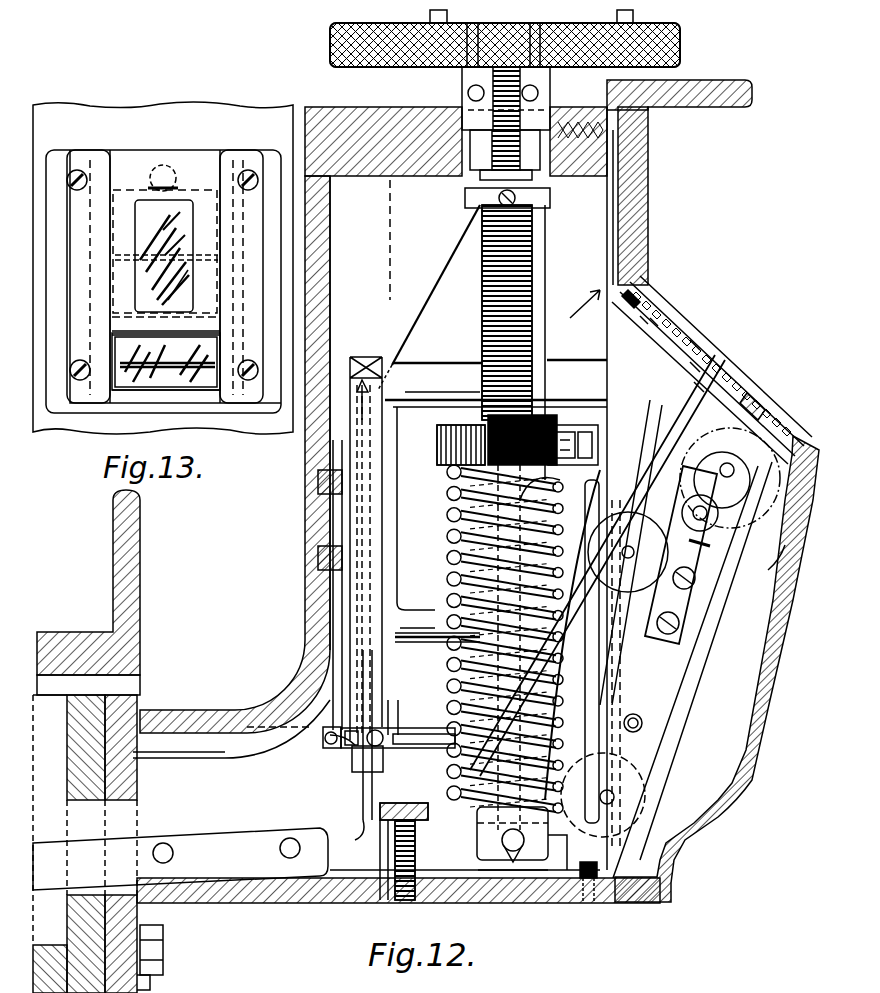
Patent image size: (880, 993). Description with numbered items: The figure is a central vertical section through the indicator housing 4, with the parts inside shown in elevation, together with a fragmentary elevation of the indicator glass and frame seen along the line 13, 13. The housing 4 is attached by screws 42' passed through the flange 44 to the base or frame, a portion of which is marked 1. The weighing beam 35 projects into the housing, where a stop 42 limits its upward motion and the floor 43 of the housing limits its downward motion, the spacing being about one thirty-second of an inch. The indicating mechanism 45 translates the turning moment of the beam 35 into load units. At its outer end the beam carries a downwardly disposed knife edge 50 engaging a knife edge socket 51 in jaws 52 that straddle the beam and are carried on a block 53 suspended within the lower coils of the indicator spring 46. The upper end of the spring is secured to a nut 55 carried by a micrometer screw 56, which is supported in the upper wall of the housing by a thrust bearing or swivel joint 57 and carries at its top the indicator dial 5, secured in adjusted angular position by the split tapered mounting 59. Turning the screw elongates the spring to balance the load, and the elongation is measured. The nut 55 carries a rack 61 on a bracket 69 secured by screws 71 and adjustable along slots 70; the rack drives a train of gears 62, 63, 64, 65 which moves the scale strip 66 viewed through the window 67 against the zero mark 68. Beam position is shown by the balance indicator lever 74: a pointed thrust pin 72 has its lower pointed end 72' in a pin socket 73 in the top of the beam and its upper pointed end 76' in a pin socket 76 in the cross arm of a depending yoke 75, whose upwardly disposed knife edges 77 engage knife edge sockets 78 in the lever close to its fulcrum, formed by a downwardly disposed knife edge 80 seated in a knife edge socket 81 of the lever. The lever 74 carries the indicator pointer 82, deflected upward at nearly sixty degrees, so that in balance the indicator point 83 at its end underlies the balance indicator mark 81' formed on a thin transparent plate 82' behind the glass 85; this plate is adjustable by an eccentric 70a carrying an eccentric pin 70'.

In FIG. 12, the base 1 is at (75, 926).
In FIG. 12, the indicator housing 4 is at (312, 622).
In FIG. 12, the indicator dial 5 is at (680, 45).
In FIG. 12, the line of view 13 is at (669, 437).
In FIG. 12, the weighing beam 35 is at (200, 829).
In FIG. 12, the stop 42 is at (404, 837).
In FIG. 12, the screws 42' is at (187, 950).
In FIG. 12, the floor of the housing 43 is at (463, 878).
In FIG. 12, the flange 44 is at (140, 985).
In FIG. 12, the indicating mechanism 45 is at (492, 306).
In FIG. 12, the indicator spring 46 is at (452, 566).
In FIG. 12, the knife edge 50 is at (540, 860).
In FIG. 12, the knife edge socket 51 is at (518, 862).
In FIG. 12, the jaws 52 is at (477, 846).
In FIG. 12, the block 53 is at (477, 814).
In FIG. 12, the nut 55 is at (437, 447).
In FIG. 12, the micrometer screw 56 is at (520, 290).
In FIG. 12, the thrust bearing or swivel joint 57 is at (534, 165).
In FIG. 12, the split tapered mounting 59 is at (552, 88).
In FIG. 12, the rack 61 is at (617, 485).
In FIG. 12, the gear 62 is at (652, 497).
In FIG. 12, the gear 63 is at (685, 472).
In FIG. 12, the gear 64 is at (730, 478).
In FIG. 12, the gear 65 is at (716, 455).
In FIG. 12, the scale strip 66 is at (705, 666).
In FIG. 12, the window 67 is at (770, 415).
In FIG. 13, the window 67 is at (196, 378).
In FIG. 13, the zero mark 68 is at (165, 378).
In FIG. 12, the bracket 69 is at (560, 425).
In FIG. 13, the slots 70 is at (163, 268).
In FIG. 12, the eccentric pin 70' is at (612, 328).
In FIG. 13, the eccentric pin 70' is at (164, 256).
In FIG. 12, the eccentric 70a is at (650, 308).
In FIG. 12, the screws 71 is at (585, 425).
In FIG. 12, the pointed thrust pin 72 is at (341, 735).
In FIG. 12, the lower pointed end 72' is at (335, 823).
In FIG. 12, the pointed pin socket 73 is at (380, 835).
In FIG. 12, the balance indicator lever 74 is at (400, 730).
In FIG. 12, the depending yoke 75 is at (405, 360).
In FIG. 12, the pin socket 76 is at (355, 534).
In FIG. 12, the upper pointed end 76' is at (356, 363).
In FIG. 12, the transverse knife edges 77 is at (360, 760).
In FIG. 12, the knife edge sockets 78 is at (385, 700).
In FIG. 12, the knife edge 80 is at (333, 712).
In FIG. 12, the knife edge socket 81 is at (312, 758).
In FIG. 13, the knife edge socket 81 is at (190, 241).
In FIG. 12, the balance indicator mark 81' is at (712, 330).
In FIG. 12, the indicator pointer 82 is at (671, 394).
In FIG. 13, the indicator pointer 82 is at (192, 284).
In FIG. 12, the thin transparent plate 82' is at (677, 305).
In FIG. 12, the indicator point 83 is at (695, 366).
In FIG. 13, the indicator point 83 is at (172, 240).
In FIG. 12, the window glass 85 is at (752, 392).